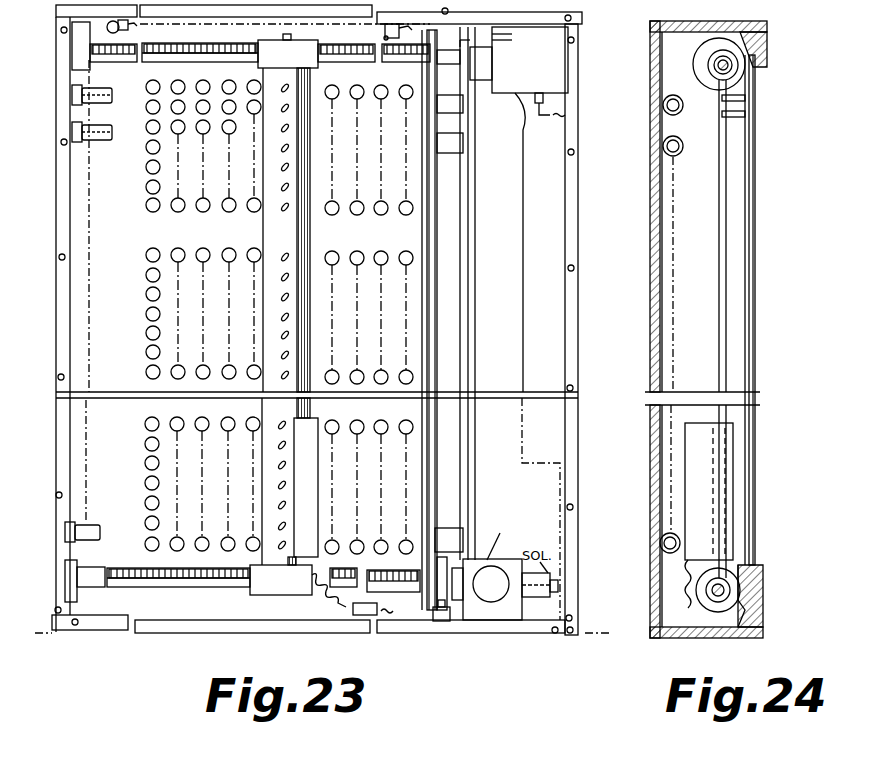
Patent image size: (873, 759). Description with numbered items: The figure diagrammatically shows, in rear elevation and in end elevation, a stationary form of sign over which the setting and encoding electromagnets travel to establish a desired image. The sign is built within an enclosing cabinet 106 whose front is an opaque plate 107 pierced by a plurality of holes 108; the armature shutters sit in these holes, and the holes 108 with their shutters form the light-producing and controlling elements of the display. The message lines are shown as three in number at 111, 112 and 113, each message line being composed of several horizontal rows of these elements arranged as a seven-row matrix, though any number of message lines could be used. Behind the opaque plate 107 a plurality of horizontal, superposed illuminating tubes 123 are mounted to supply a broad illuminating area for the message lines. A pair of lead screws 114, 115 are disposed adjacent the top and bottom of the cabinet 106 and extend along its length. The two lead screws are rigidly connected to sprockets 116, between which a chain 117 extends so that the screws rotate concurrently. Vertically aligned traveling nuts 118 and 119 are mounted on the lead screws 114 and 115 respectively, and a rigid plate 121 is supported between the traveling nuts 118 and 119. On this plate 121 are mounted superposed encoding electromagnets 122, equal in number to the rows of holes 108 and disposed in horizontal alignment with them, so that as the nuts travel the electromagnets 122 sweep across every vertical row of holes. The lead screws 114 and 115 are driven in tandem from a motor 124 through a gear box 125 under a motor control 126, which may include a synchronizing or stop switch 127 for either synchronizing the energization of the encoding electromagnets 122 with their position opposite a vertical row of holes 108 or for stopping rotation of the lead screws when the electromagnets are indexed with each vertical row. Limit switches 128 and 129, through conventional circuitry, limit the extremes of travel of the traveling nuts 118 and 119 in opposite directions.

In FIG. 24, the enclosing cabinet 106 is at (652, 80).
In FIG. 23, the opaque plate 107 is at (126, 183).
In FIG. 24, the opaque plate 107 is at (767, 85).
In FIG. 23, the holes 108 is at (201, 212).
In FIG. 24, the holes 108 is at (757, 100).
In FIG. 23, the message line 111 is at (420, 192).
In FIG. 23, the message line 112 is at (408, 246).
In FIG. 23, the message line 113 is at (413, 448).
In FIG. 23, the lead screw 114 is at (165, 45).
In FIG. 23, the lead screw 115 is at (168, 588).
In FIG. 23, the sprockets 116 is at (427, 58).
In FIG. 23, the chain 117 is at (430, 223).
In FIG. 23, the traveling nut 118 is at (288, 51).
In FIG. 24, the traveling nut 118 is at (712, 70).
In FIG. 23, the traveling nut 119 is at (321, 516).
In FIG. 24, the traveling nut 119 is at (710, 600).
In FIG. 23, the rigid plate 121 is at (312, 248).
In FIG. 24, the rigid plate 121 is at (728, 210).
In FIG. 23, the encoding electromagnets 122 is at (281, 296).
In FIG. 24, the encoding electromagnets 122 is at (730, 118).
In FIG. 23, the illuminating tubes 123 is at (90, 100).
In FIG. 24, the illuminating tubes 123 is at (676, 113).
In FIG. 23, the motor 124 is at (503, 605).
In FIG. 23, the gear box 125 is at (497, 560).
In FIG. 23, the motor control 126 is at (570, 58).
In FIG. 23, the synchronizing or stop switch 127 is at (443, 625).
In FIG. 23, the limit switch 128 is at (115, 34).
In FIG. 23, the limit switch 129 is at (384, 30).